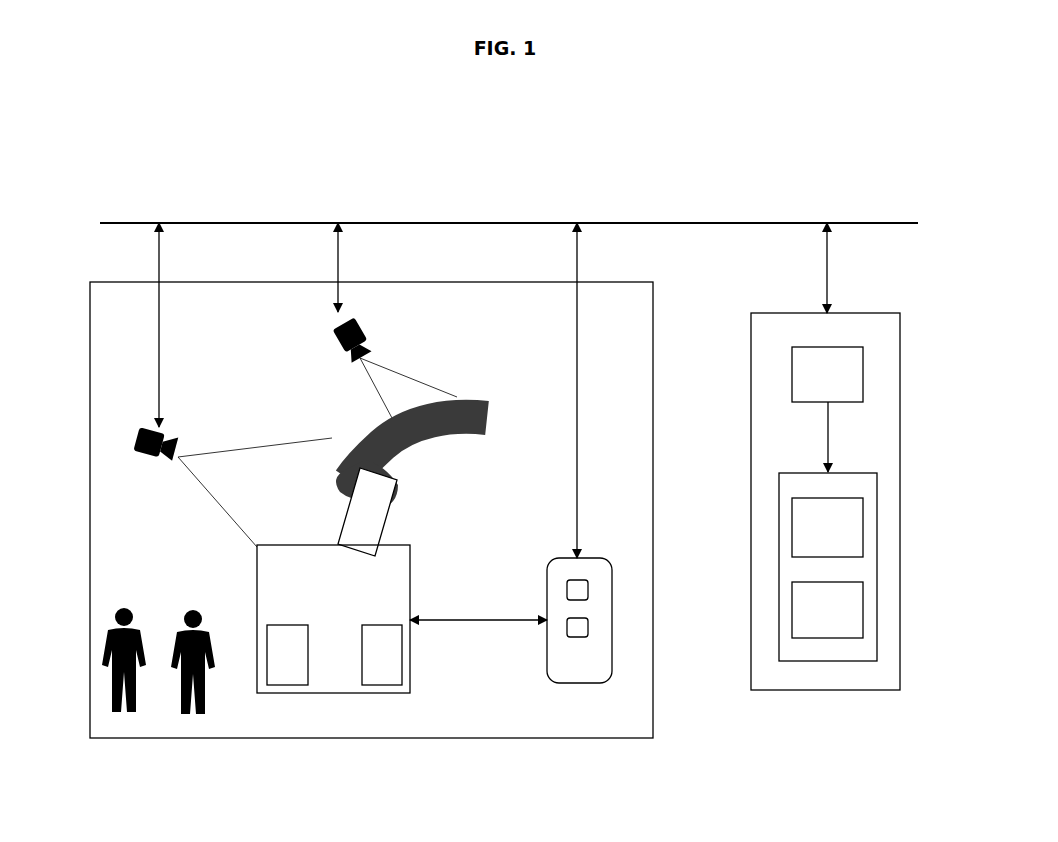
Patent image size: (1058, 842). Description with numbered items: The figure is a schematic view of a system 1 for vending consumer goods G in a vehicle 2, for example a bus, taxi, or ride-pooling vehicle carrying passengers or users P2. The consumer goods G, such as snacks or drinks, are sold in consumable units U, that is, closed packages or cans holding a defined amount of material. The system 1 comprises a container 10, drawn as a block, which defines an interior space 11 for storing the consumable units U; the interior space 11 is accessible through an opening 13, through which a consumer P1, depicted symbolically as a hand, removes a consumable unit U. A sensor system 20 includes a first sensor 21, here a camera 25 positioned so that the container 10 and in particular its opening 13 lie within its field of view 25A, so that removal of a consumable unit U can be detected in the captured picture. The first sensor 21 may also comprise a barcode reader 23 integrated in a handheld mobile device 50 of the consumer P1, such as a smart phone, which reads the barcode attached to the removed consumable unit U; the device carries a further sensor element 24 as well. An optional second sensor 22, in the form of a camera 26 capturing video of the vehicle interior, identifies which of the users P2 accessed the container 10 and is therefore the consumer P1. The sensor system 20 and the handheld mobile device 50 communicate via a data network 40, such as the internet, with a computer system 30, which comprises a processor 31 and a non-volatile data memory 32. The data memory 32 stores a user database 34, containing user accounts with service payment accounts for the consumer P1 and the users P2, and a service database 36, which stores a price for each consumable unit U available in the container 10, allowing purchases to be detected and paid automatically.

The system 1 is at (834, 150).
The vehicle 2 is at (488, 738).
The container 10 is at (368, 583).
The interior space 11 is at (284, 546).
The opening 13 is at (368, 583).
The sensor system 20 is at (283, 292).
The first sensor 21 is at (228, 465).
The second sensor 22 is at (395, 359).
The barcode reader 23 is at (588, 590).
The sensor element 24 is at (578, 637).
The camera 25 is at (228, 465).
The field of view 25A is at (250, 444).
The camera 26 is at (364, 323).
The computer system 30 is at (768, 312).
The processor 31 is at (790, 378).
The data memory 32 is at (878, 493).
The user database 34 is at (827, 527).
The service database 36 is at (827, 610).
The data network 40 is at (453, 222).
The handheld mobile device 50 is at (565, 623).
The consumer P1 is at (435, 452).
The users P2 is at (108, 692).
The consumer goods G is at (374, 626).
The consumable unit U is at (388, 515).